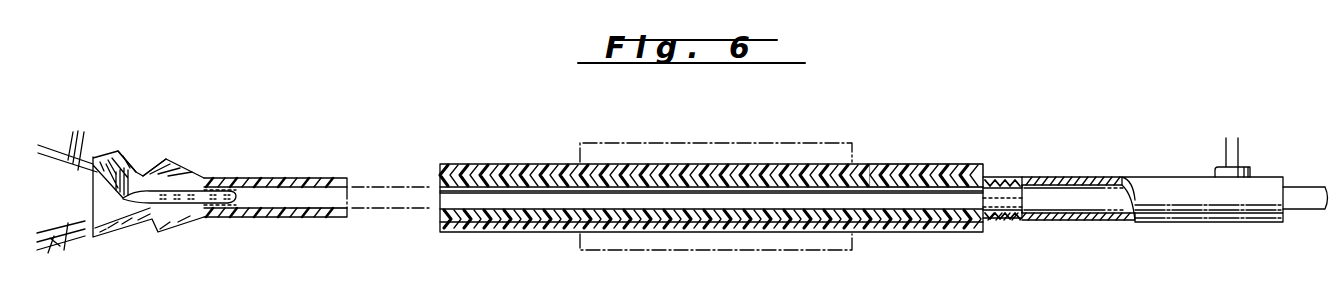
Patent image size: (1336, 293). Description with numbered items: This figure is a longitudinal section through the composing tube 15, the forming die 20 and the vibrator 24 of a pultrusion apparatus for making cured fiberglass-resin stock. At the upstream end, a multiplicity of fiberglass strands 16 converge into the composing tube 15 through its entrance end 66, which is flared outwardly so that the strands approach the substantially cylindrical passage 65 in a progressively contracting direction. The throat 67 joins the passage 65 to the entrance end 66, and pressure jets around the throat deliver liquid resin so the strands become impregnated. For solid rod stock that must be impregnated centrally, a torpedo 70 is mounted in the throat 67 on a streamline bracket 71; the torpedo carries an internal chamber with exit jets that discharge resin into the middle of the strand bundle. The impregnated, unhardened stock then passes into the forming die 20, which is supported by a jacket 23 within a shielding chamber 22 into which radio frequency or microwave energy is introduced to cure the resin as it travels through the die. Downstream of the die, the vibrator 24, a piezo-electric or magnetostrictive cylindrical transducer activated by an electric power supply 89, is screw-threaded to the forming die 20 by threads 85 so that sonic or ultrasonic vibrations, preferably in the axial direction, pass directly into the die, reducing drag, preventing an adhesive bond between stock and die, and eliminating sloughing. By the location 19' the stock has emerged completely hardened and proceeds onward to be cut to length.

The strands 16 is at (67, 192).
The streamline bracket 71 is at (137, 180).
The composing tube 15 is at (315, 150).
The passage 65 is at (300, 205).
The entrance end 66 is at (113, 215).
The torpedo 70 is at (187, 203).
The throat 67 is at (216, 207).
The shielding chamber 22 is at (819, 122).
The jacket 23 is at (912, 148).
The forming die 20 is at (936, 168).
The threads 85 is at (1005, 175).
The vibrator 24 is at (1155, 177).
The electric power supply 89 is at (1244, 162).
The location of hardened stock 19' is at (1305, 182).